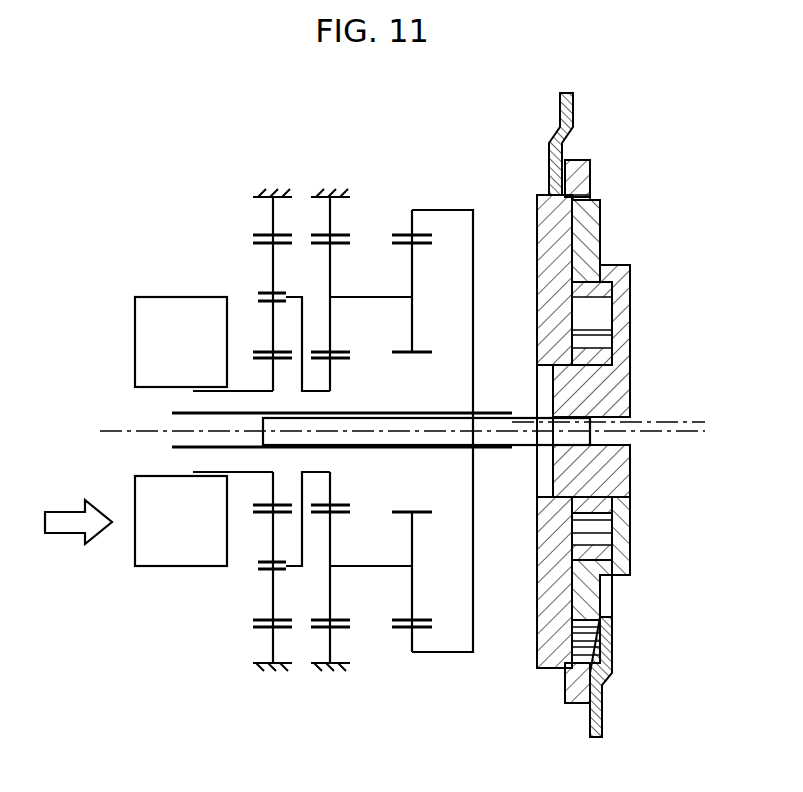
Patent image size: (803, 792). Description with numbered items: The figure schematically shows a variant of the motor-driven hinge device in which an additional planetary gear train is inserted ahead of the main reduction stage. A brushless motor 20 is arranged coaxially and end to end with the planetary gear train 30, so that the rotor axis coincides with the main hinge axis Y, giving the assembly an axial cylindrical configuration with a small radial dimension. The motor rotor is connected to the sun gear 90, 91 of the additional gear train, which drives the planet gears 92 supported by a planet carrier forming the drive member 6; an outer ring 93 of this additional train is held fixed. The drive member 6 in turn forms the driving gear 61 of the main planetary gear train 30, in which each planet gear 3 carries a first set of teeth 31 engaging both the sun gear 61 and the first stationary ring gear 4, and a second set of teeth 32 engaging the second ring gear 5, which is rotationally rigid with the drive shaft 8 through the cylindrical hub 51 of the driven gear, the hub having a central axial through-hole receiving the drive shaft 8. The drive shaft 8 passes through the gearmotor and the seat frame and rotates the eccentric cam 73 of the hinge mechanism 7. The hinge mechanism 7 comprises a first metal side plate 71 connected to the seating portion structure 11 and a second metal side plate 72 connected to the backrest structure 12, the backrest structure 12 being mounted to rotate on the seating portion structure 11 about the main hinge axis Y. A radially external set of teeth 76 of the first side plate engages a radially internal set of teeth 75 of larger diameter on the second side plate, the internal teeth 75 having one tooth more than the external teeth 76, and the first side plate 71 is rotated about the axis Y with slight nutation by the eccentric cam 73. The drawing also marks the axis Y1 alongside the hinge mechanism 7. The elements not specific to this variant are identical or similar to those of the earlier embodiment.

The planet gear 3 is at (371, 283).
The first stationary ring gear 4 is at (320, 196).
The second ring gear 5 is at (421, 240).
The drive member 6 is at (347, 387).
The first hinge mechanism 7 is at (654, 363).
The drive shaft 8 is at (527, 448).
The seating portion structure 11 is at (603, 712).
The backrest structure 12 is at (566, 94).
The brushless motor 20 is at (131, 350).
The planetary gear train 30 is at (391, 684).
The first set of teeth 31 is at (340, 351).
The second set of teeth 32 is at (430, 244).
The cylindrical hub 51 is at (486, 413).
The sun gear 61 is at (340, 505).
The first metal side plate 71 is at (590, 593).
The second metal side plate 72 is at (580, 160).
The eccentric cam 73 is at (617, 387).
The radially internal set of teeth 75 is at (585, 196).
The radially external set of teeth 76 is at (598, 200).
The sun gear 90 is at (272, 378).
The sun gear 91 is at (262, 503).
The planet gears 92 is at (273, 266).
The outer ring 93 is at (265, 236).
The main hinge axis Y is at (132, 427).
The clutch axis Y1 is at (680, 417).